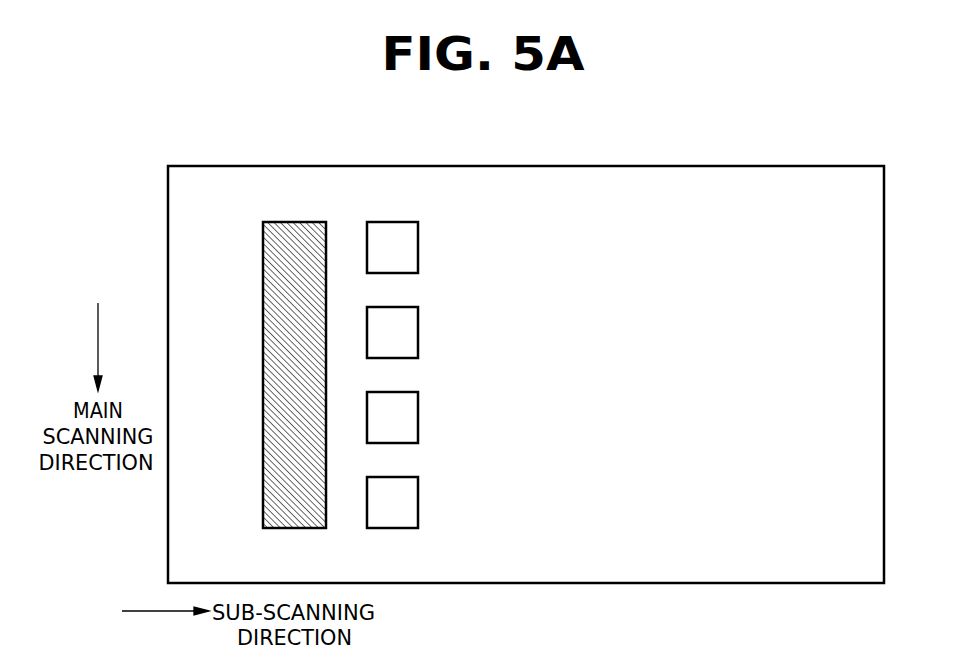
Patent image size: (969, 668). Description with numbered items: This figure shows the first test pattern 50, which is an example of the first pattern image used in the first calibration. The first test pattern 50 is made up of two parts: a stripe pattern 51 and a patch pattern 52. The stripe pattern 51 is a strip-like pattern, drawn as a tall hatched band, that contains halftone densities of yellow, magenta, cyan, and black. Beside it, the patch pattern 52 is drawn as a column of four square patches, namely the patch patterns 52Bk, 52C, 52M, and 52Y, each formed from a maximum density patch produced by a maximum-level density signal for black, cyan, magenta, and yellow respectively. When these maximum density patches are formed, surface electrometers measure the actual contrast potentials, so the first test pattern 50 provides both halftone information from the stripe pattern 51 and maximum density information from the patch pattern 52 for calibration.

The first test pattern 50 is at (427, 127).
The stripe pattern 51 is at (293, 222).
The patch pattern 52 is at (393, 222).
The Bk patch pattern 52Bk is at (418, 252).
The C patch pattern 52C is at (418, 337).
The M patch pattern 52M is at (418, 422).
The Y patch pattern 52Y is at (418, 507).